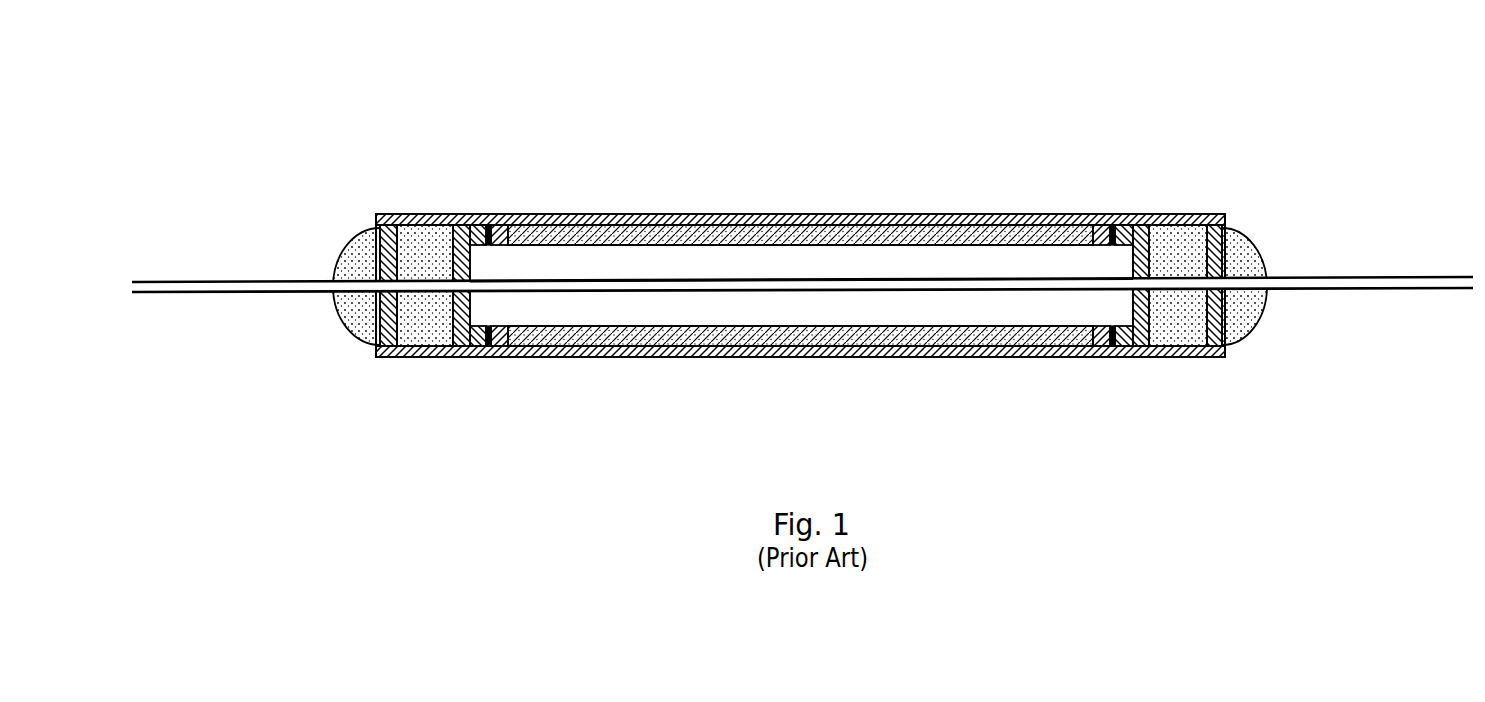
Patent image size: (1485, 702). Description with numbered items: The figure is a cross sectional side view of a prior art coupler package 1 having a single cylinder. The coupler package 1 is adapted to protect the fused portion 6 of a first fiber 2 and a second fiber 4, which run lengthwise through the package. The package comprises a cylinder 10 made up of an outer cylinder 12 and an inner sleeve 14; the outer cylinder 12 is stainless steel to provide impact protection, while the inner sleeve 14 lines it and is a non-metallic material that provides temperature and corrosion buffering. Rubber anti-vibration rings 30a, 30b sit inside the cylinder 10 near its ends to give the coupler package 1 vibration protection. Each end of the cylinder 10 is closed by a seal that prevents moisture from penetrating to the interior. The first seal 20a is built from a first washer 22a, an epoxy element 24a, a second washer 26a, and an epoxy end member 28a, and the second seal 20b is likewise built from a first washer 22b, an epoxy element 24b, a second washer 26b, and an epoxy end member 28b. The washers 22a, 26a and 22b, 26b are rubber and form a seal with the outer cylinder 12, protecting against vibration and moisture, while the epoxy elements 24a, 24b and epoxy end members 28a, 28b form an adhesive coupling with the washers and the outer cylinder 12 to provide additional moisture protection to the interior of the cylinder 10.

The coupler package 1 is at (428, 133).
The first fiber 2 is at (207, 281).
The second fiber 4 is at (192, 293).
The fused portion 6 is at (797, 281).
The cylinder 10 is at (1094, 213).
The outer cylinder 12 is at (978, 213).
The inner sleeve 14 is at (886, 213).
The first seal 20a is at (346, 243).
The second seal 20b is at (1271, 245).
The first washer 22a is at (468, 340).
The first washer 22b is at (1140, 340).
The epoxy element 24a is at (424, 337).
The epoxy element 24b is at (1182, 333).
The second washer 26a is at (375, 347).
The second washer 26b is at (1225, 328).
The epoxy end member 28a is at (357, 325).
The epoxy end member 28b is at (1253, 318).
The anti-vibration ring 30a is at (500, 338).
The anti-vibration ring 30b is at (1103, 340).